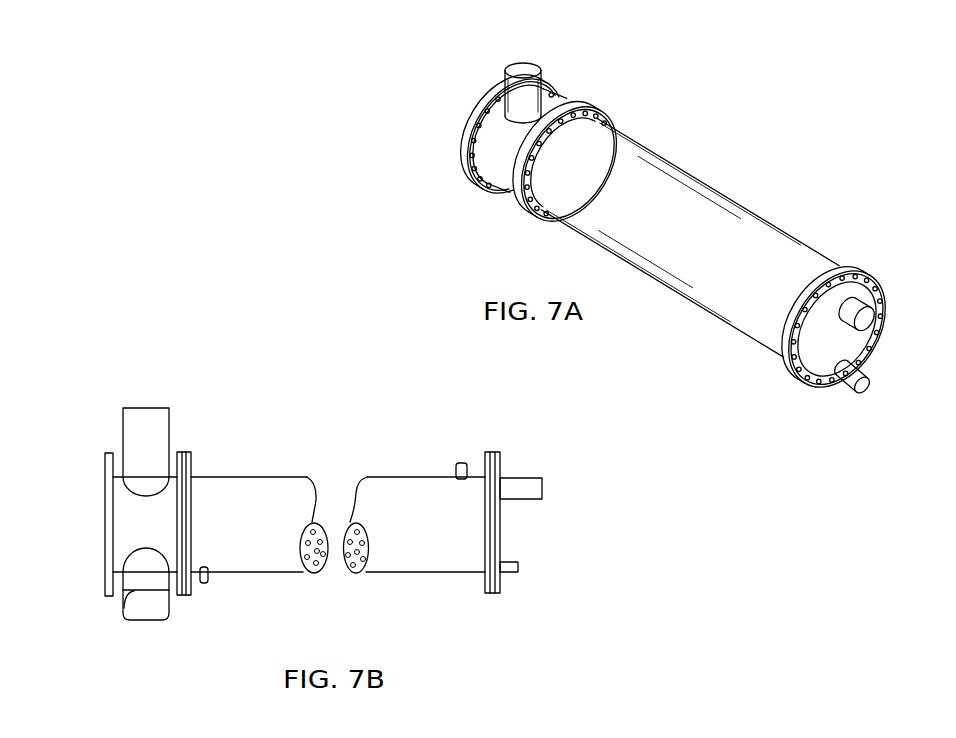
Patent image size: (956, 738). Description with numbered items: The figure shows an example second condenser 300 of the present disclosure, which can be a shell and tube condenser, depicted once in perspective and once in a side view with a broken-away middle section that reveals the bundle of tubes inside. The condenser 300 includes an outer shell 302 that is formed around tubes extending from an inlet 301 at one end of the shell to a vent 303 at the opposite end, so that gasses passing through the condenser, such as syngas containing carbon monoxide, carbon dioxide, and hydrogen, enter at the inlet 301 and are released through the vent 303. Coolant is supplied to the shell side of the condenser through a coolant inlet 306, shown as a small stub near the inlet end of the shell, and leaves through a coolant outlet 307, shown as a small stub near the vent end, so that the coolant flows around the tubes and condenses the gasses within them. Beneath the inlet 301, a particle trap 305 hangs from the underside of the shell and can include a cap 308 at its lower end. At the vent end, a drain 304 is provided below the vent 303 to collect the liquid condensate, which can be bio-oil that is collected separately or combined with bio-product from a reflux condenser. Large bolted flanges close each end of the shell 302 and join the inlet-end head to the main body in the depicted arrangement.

In FIG. 7A, the condenser 300 is at (781, 137).
In FIG. 7B, the condenser 300 is at (346, 378).
In FIG. 7A, the inlet 301 is at (540, 61).
In FIG. 7B, the inlet 301 is at (156, 387).
In FIG. 7A, the outer shell 302 is at (748, 227).
In FIG. 7A, the vent 303 is at (862, 327).
In FIG. 7B, the vent 303 is at (542, 488).
In FIG. 7A, the drain 304 is at (871, 389).
In FIG. 7B, the drain 304 is at (518, 565).
In FIG. 7B, the particle trap 305 is at (148, 634).
In FIG. 7B, the coolant inlet 306 is at (204, 586).
In FIG. 7B, the coolant outlet 307 is at (461, 460).
In FIG. 7B, the cap 308 is at (128, 604).